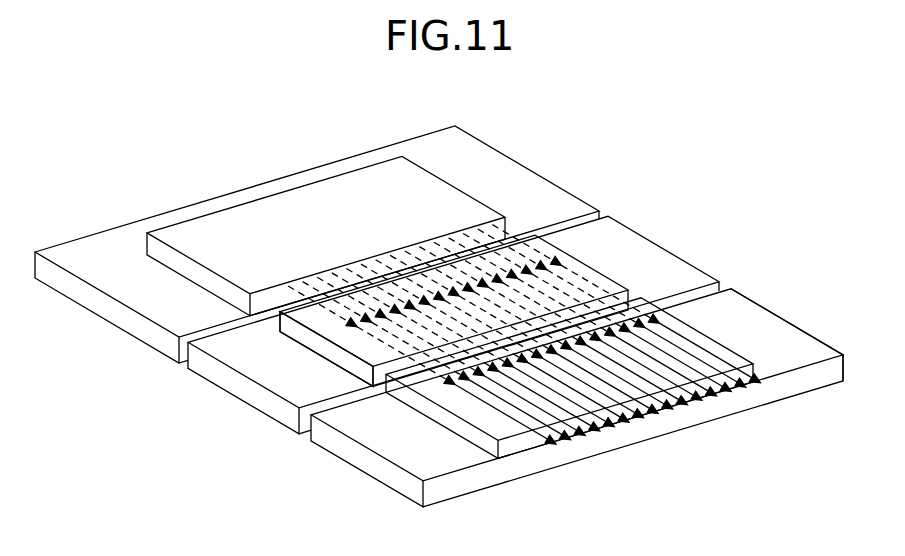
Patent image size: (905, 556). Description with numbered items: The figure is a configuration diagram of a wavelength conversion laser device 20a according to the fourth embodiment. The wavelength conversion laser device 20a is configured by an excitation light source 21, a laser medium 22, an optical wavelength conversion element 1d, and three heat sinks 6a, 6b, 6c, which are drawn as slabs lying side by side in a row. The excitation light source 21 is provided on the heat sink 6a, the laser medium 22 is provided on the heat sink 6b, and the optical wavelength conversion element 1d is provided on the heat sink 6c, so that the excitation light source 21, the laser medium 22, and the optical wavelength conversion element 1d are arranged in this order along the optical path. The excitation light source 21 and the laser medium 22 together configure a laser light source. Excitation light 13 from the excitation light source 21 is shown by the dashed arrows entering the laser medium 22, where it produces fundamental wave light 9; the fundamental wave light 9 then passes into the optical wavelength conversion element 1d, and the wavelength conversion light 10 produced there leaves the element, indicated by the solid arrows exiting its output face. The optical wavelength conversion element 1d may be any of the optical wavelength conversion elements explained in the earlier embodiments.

The wavelength conversion laser device 20a is at (165, 213).
The excitation light source 21 is at (300, 207).
The heat sink 6a is at (515, 182).
The excitation light 13 is at (602, 285).
The heat sink 6b is at (653, 265).
The heat sink 6c is at (745, 312).
The optical wavelength conversion element 1d is at (742, 350).
The laser medium 22 is at (312, 340).
The fundamental wave light 9 is at (437, 373).
The wavelength conversion light 10 is at (542, 437).